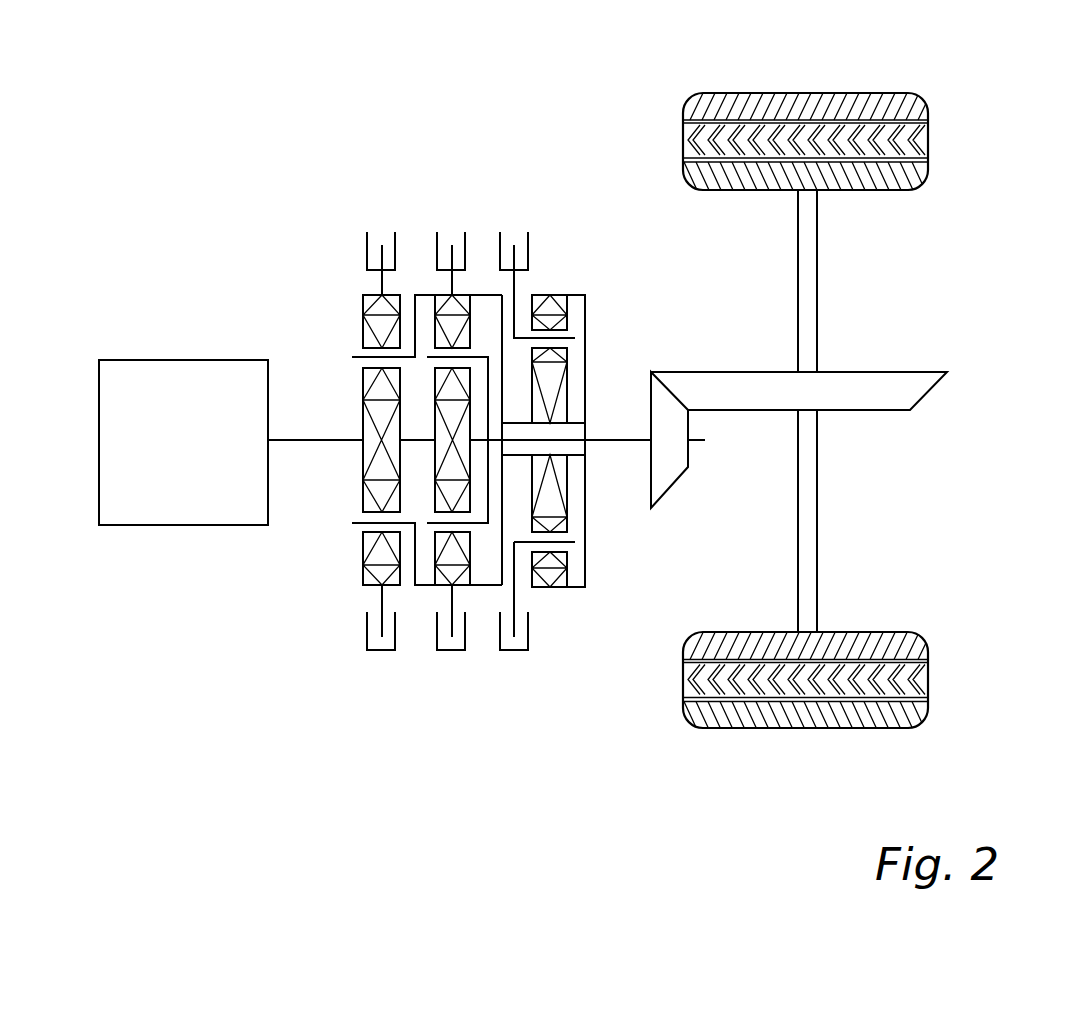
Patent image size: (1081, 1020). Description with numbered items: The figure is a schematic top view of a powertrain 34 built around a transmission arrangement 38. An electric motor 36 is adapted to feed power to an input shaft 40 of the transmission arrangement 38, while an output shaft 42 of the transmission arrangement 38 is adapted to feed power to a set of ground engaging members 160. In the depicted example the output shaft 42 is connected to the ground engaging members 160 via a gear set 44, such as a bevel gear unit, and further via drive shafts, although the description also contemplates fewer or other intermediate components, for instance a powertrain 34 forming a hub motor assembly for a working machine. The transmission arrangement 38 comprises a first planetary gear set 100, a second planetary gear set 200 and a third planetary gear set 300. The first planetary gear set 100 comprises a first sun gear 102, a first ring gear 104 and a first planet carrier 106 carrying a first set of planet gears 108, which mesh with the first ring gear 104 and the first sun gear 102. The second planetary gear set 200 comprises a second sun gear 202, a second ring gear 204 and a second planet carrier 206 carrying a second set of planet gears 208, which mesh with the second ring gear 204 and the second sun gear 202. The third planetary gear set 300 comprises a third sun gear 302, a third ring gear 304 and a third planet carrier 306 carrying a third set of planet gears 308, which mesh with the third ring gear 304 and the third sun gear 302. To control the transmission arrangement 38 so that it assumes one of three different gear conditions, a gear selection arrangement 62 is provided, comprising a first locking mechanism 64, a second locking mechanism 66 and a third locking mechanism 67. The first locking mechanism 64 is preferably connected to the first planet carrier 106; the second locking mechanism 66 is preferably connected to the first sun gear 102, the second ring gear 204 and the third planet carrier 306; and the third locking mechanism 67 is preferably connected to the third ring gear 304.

The powertrain 34 is at (531, 110).
The electric motor 36 is at (147, 358).
The transmission arrangement 38 is at (452, 179).
The input shaft 40 is at (290, 443).
The output shaft 42 is at (613, 442).
The gear set 44 is at (903, 334).
The gear selection arrangement 62 is at (406, 184).
The first locking mechanism 64 is at (543, 219).
The second locking mechanism 66 is at (477, 234).
The third locking mechanism 67 is at (360, 237).
The first planetary gear set 100 is at (553, 667).
The first sun gear 102 is at (565, 395).
The first ring gear 104 is at (550, 295).
The first planet carrier 106 is at (572, 542).
The first set of planet gears 108 is at (552, 560).
The second planetary gear set 200 is at (462, 696).
The second sun gear 202 is at (445, 442).
The second ring gear 204 is at (440, 583).
The second planet carrier 206 is at (433, 350).
The second set of planet gears 208 is at (435, 548).
The third planetary gear set 300 is at (377, 692).
The third sun gear 302 is at (363, 423).
The third ring gear 304 is at (365, 295).
The third planet carrier 306 is at (360, 357).
The third set of planet gears 308 is at (368, 540).
The ground engaging member 160 is at (903, 682).